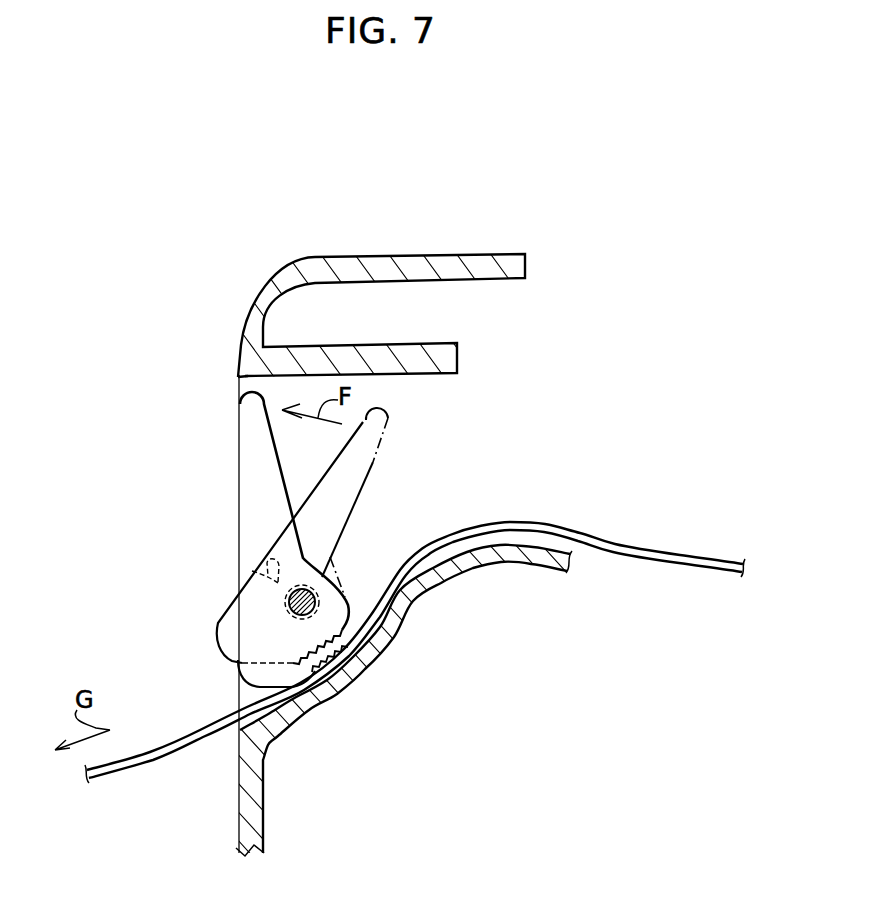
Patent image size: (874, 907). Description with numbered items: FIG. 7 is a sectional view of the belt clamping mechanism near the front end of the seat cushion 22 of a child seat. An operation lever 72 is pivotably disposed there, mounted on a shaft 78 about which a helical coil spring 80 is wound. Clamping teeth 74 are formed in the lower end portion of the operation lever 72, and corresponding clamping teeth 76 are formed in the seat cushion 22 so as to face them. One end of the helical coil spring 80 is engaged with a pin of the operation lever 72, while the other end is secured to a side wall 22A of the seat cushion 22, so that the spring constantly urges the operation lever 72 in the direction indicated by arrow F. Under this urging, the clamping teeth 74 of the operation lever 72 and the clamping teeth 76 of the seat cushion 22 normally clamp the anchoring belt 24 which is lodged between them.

The seat cushion 22 is at (274, 233).
The side wall 22A is at (266, 388).
The anchoring belt 24 is at (615, 542).
The operation lever 72 is at (252, 516).
The clamping teeth 74 is at (300, 668).
The clamping teeth 76 is at (343, 657).
The shaft 78 is at (319, 586).
The helical coil spring 80 is at (252, 571).